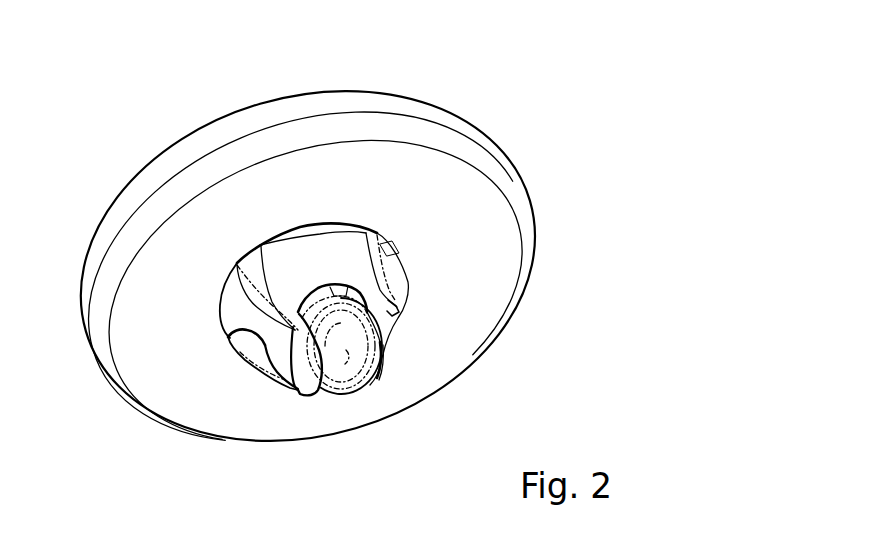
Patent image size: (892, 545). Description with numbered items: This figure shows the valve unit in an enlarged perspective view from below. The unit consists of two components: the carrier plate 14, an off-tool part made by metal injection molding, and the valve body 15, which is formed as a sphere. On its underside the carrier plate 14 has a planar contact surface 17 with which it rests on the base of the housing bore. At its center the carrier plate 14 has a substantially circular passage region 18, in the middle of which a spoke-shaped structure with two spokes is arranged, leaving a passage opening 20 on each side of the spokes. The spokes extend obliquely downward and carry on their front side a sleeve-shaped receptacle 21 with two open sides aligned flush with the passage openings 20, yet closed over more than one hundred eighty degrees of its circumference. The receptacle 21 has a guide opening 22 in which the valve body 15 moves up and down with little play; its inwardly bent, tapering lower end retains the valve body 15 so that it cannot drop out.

The carrier plate 14 is at (447, 80).
The valve body 15 is at (350, 378).
The contact surface 17 is at (468, 280).
The passage region 18 is at (420, 256).
The passage opening 20 is at (312, 233).
The sleeve-shaped receptacle 21 is at (412, 312).
The guide opening 22 is at (325, 362).